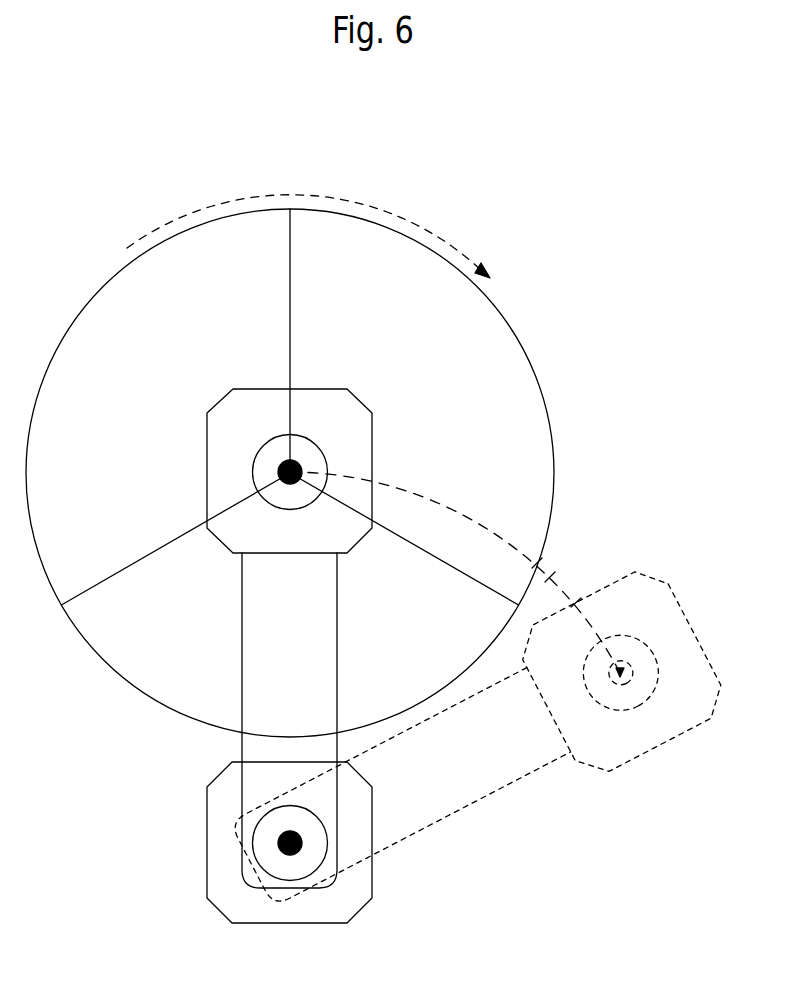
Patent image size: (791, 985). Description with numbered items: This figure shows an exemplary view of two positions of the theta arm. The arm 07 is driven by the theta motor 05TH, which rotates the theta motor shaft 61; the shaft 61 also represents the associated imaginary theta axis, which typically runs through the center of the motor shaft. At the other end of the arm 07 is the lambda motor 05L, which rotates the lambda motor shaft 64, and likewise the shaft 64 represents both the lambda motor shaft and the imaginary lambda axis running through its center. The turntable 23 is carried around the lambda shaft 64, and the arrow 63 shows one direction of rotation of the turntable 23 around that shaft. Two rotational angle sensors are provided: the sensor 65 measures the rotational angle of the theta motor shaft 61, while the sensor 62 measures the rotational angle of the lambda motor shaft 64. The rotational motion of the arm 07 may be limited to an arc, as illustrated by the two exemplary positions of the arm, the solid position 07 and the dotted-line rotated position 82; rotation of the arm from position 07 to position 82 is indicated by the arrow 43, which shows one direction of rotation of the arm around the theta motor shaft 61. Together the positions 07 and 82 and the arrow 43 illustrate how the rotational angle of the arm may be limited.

The turntable 23 is at (527, 376).
The direction of rotation of the turntable 63 is at (428, 232).
The lambda motor 05L is at (225, 413).
The lambda motor shaft 64 is at (300, 462).
The rotational angle sensor 62 is at (263, 460).
The arm 07 is at (258, 662).
The direction of rotation of the arm 43 is at (551, 576).
The dotted-line rotation of the arm 82 is at (478, 772).
The theta motor 05TH is at (238, 898).
The rotational angle sensor 65 is at (283, 890).
The theta motor shaft 61 is at (303, 853).